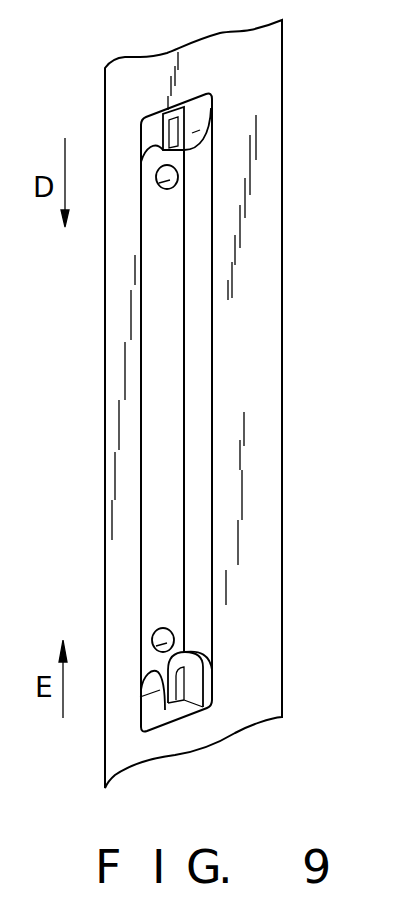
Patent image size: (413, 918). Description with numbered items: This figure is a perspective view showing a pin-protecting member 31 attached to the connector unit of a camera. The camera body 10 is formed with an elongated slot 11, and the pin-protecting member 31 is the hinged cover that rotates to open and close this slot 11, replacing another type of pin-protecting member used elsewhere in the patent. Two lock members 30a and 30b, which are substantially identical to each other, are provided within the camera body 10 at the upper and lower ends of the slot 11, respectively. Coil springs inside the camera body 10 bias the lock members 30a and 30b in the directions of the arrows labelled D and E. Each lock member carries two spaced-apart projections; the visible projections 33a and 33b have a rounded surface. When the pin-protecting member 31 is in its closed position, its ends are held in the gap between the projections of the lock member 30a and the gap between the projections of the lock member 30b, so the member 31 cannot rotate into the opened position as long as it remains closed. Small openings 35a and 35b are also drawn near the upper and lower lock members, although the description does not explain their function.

The camera body 10 is at (282, 227).
The slot 11 is at (202, 445).
The pin-protecting member 31 is at (172, 383).
The lock member 30a is at (195, 113).
The projection 33a is at (190, 143).
The upper hole 35a is at (178, 175).
The lock member 30b is at (193, 695).
The projection 33b is at (193, 663).
The lower hole 35b is at (176, 637).